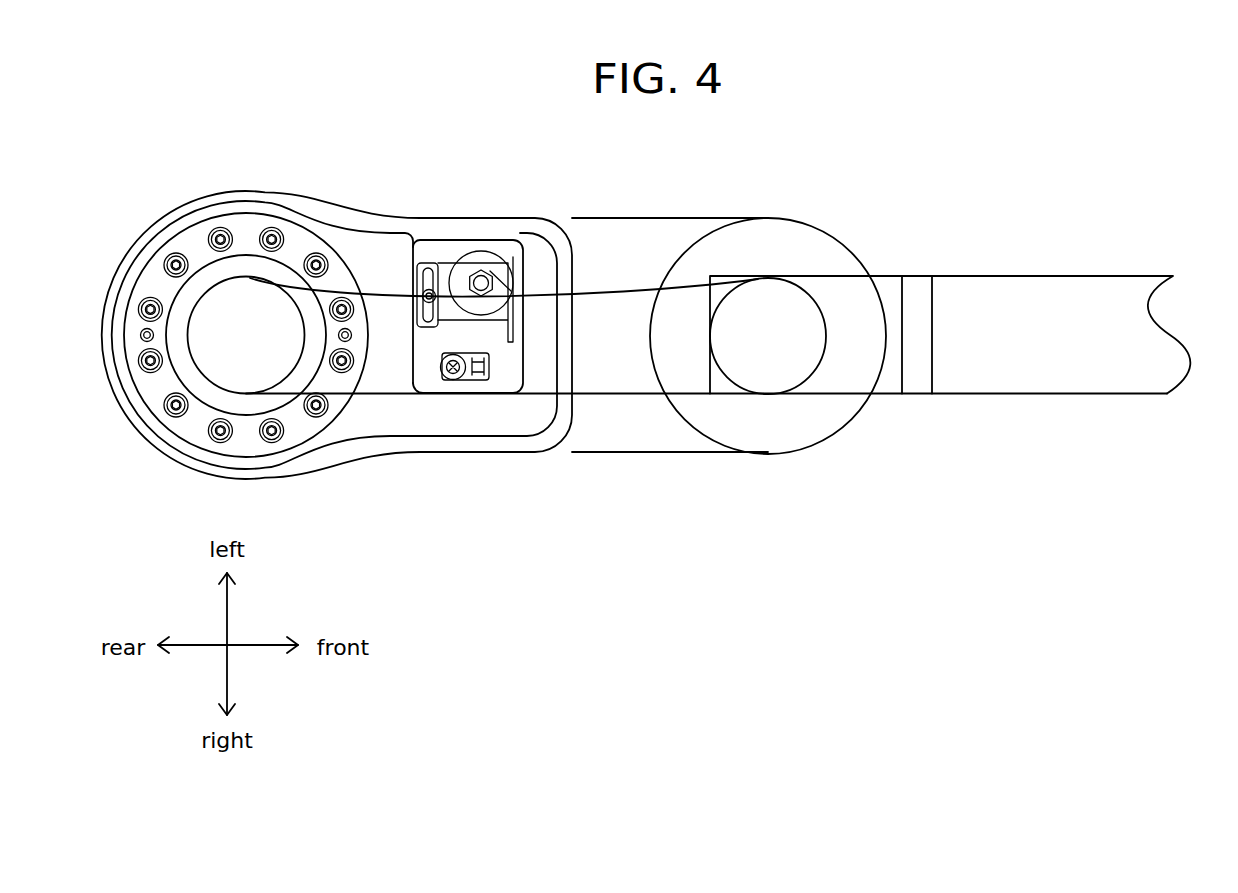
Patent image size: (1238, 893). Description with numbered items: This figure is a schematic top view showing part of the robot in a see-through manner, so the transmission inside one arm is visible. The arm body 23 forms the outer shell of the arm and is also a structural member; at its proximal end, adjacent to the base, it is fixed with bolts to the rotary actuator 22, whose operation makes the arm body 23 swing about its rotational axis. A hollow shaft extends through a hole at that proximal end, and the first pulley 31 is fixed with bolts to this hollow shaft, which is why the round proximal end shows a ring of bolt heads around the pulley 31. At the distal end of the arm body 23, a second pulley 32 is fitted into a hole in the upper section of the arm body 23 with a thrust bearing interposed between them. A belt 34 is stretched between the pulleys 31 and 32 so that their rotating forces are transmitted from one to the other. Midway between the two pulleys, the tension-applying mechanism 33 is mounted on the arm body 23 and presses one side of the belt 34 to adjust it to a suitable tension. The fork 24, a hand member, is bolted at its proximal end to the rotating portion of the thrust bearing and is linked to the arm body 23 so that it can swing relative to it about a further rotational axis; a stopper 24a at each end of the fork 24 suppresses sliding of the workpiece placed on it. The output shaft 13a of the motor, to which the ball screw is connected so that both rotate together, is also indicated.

The output shaft 13a is at (425, 635).
The rotary actuator 22 is at (280, 436).
The arm body 23 is at (578, 457).
The fork 24 is at (1058, 375).
The stopper 24a is at (915, 395).
The first pulley 31 is at (202, 346).
The second pulley 32 is at (800, 287).
The tension-applying mechanism 33 is at (490, 268).
The belt 34 is at (638, 393).